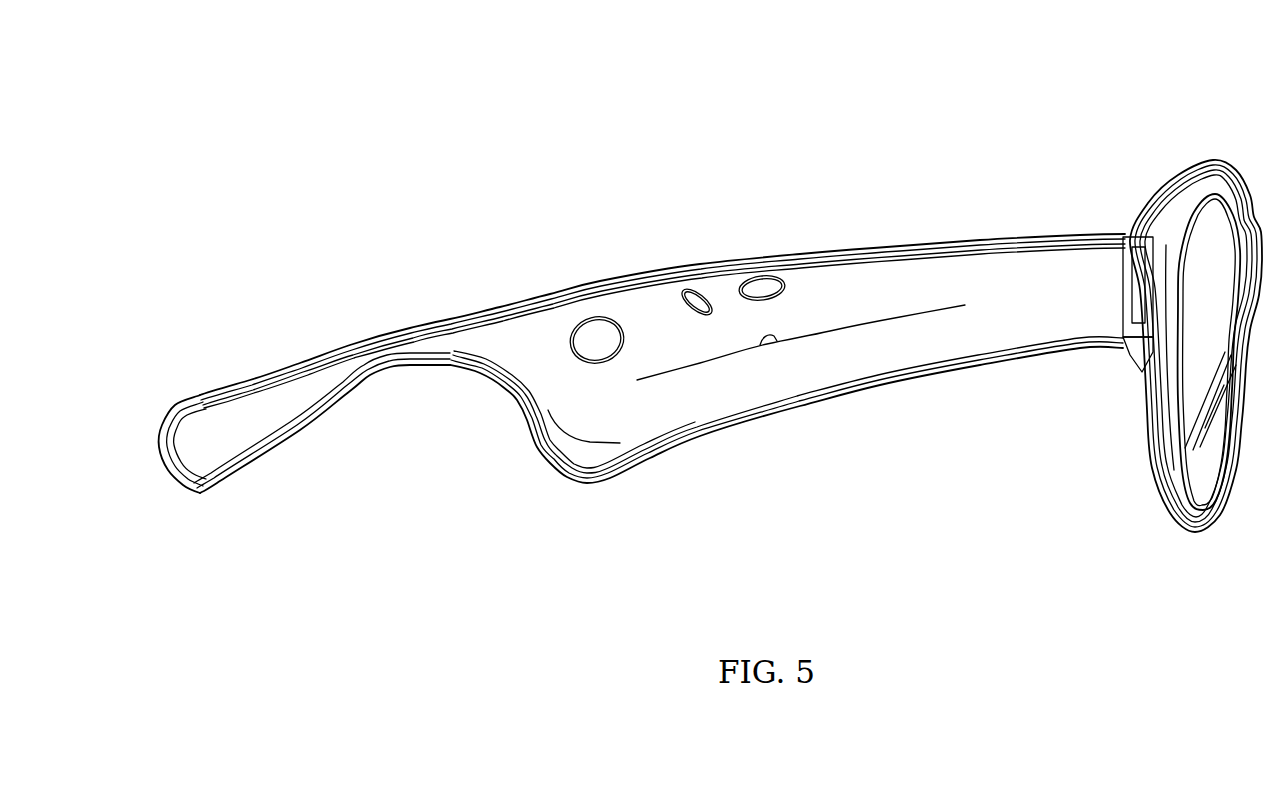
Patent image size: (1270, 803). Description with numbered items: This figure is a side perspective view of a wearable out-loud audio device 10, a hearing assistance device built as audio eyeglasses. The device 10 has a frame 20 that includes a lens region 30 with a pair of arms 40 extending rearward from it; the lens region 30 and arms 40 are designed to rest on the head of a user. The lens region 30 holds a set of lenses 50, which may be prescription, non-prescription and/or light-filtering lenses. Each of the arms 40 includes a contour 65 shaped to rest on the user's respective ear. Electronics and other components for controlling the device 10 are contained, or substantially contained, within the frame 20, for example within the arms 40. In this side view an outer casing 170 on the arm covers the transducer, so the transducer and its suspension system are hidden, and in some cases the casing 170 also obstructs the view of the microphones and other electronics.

The wearable out-loud audio device 10 is at (221, 136).
The frame 20 is at (569, 205).
The lens region 30 is at (1154, 127).
The arms 40 is at (576, 533).
The lenses 50 is at (1226, 336).
The contour 65 is at (369, 453).
The outer casing 170 is at (857, 309).